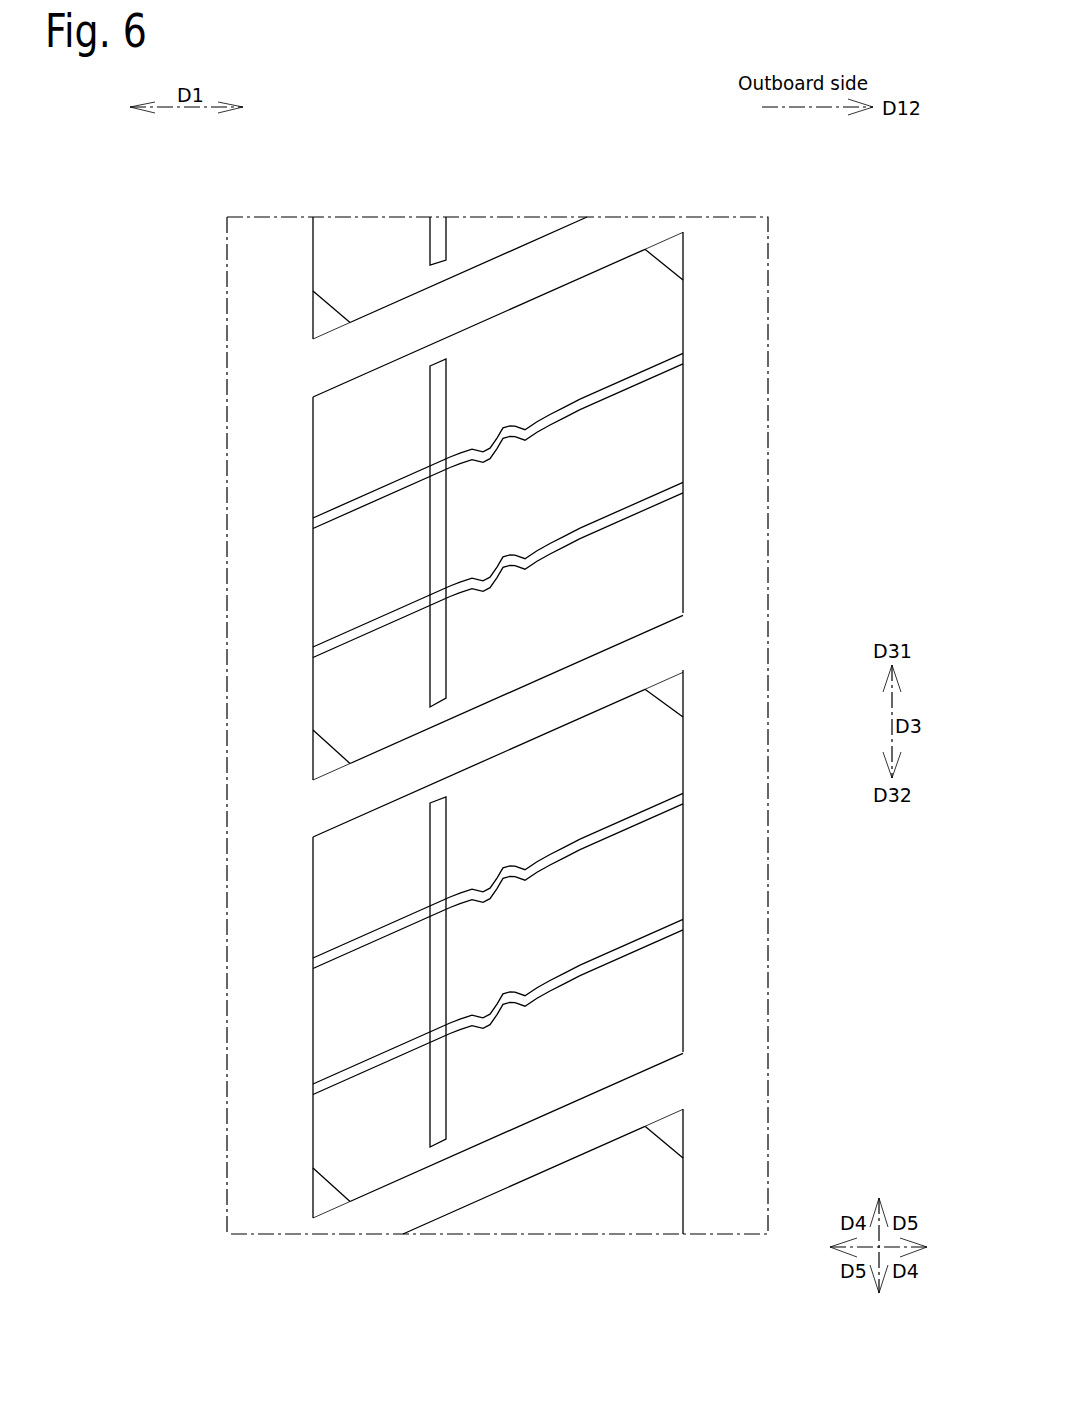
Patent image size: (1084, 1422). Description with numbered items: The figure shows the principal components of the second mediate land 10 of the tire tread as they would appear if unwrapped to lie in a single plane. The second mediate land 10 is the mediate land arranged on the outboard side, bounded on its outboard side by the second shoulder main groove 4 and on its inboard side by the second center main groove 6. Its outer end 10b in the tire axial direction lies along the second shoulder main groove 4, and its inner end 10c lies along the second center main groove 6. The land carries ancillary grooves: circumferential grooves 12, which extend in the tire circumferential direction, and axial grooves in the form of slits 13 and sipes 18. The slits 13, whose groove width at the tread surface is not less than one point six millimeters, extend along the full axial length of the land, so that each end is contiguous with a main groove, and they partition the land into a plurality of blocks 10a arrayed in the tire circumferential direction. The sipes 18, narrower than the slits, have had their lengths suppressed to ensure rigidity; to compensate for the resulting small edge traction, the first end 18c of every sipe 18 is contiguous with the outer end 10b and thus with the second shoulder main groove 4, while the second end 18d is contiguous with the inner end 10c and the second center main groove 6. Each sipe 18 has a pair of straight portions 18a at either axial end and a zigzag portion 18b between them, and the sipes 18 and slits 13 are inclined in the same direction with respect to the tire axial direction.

The second shoulder main groove 4 is at (728, 242).
The second center main groove 6 is at (268, 242).
The second mediate land 10 is at (488, 226).
The block 10a is at (327, 450).
The outer end of second mediate land 10b is at (684, 292).
The inner end of second mediate land 10c is at (313, 265).
The circumferential groove 12 is at (450, 388).
The slit 13 is at (340, 363).
The sipe 18 is at (499, 693).
The straight portion 18a is at (597, 393).
The zigzag portion 18b is at (505, 420).
The first end of sipe 18c is at (684, 352).
The second end of sipe 18d is at (313, 523).